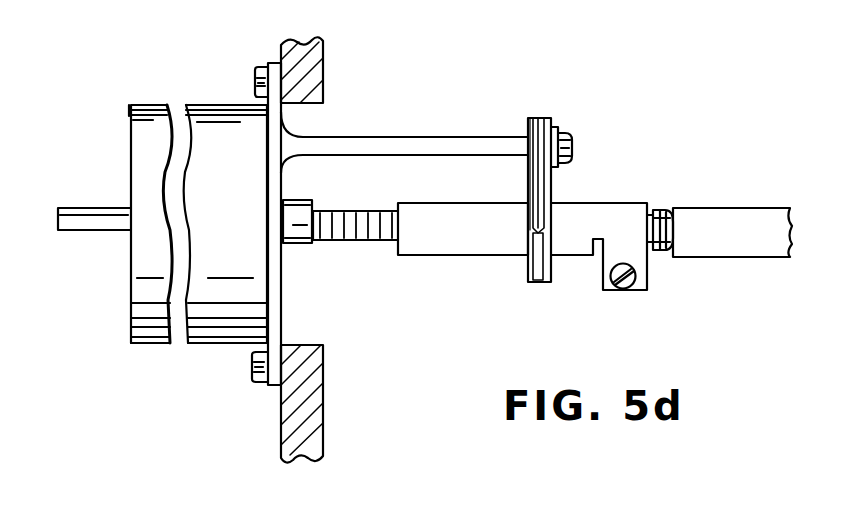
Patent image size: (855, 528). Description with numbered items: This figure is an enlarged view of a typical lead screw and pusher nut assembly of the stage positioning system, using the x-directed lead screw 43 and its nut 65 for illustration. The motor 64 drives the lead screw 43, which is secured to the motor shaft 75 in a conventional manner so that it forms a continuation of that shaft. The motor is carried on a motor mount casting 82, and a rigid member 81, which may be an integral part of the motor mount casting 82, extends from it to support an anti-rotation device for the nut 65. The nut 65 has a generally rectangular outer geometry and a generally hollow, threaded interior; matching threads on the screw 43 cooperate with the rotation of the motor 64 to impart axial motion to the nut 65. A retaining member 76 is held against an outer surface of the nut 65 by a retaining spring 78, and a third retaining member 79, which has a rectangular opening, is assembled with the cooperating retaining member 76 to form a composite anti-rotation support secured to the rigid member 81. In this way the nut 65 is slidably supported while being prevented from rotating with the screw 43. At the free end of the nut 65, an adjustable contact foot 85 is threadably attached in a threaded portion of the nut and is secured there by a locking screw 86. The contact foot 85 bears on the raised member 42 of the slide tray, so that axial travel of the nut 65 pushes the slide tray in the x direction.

The motor 64 is at (147, 104).
The motor mount casting 82 is at (273, 62).
The rigid member 81 is at (407, 135).
The motor shaft 75 is at (296, 246).
The lead screw 43 is at (342, 212).
The nut 65 is at (430, 257).
The retaining member 76 is at (532, 284).
The retaining spring 78 is at (533, 118).
The third retaining member 79 is at (553, 183).
The locking screw 86 is at (638, 291).
The adjustable contact foot 85 is at (662, 211).
The raised member 42 is at (727, 207).